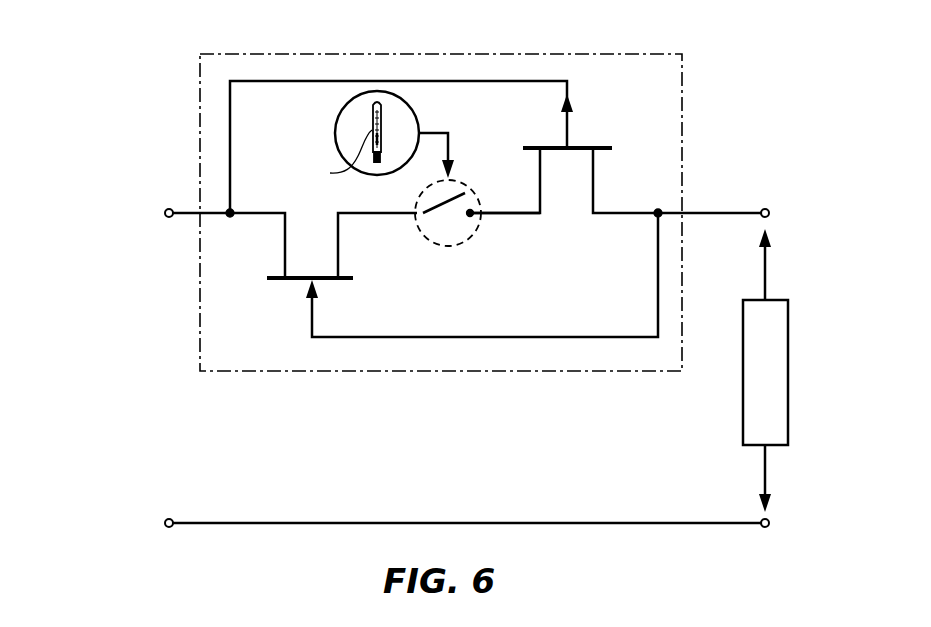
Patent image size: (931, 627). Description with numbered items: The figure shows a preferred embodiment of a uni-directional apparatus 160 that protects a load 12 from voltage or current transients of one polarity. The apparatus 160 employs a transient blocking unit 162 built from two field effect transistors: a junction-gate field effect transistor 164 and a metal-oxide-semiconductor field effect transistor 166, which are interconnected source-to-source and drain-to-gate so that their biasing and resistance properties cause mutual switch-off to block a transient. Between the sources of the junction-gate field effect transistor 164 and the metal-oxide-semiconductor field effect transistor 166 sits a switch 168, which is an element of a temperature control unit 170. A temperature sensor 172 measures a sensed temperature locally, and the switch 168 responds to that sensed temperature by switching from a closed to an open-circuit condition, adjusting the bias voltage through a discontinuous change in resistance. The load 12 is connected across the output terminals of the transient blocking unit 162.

The uni-directional apparatus 160 is at (125, 110).
The transient blocking unit 162 is at (683, 171).
The junction-gate field effect transistor 164 is at (607, 140).
The metal-oxide-semiconductor field effect transistor 166 is at (347, 281).
The switch 168 is at (456, 178).
The temperature control unit 170 is at (507, 241).
The temperature sensor 172 is at (336, 131).
The load 12 is at (743, 425).